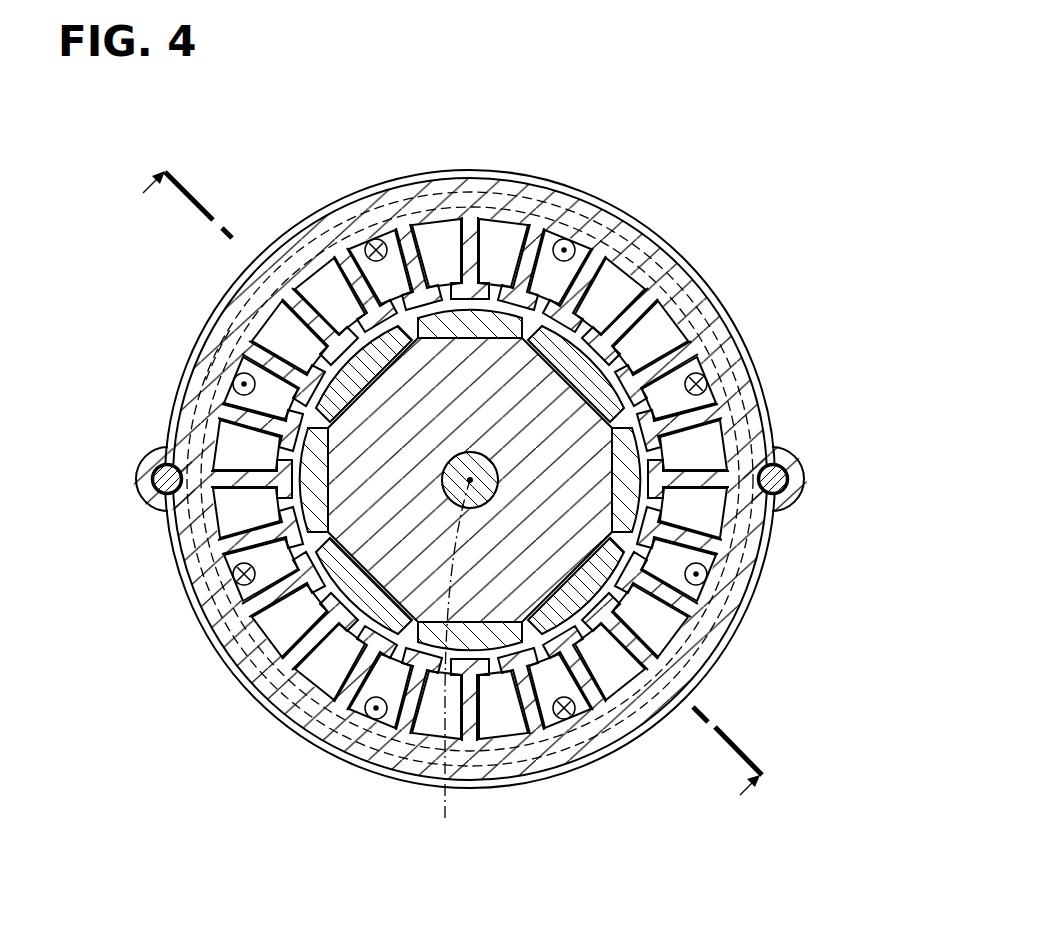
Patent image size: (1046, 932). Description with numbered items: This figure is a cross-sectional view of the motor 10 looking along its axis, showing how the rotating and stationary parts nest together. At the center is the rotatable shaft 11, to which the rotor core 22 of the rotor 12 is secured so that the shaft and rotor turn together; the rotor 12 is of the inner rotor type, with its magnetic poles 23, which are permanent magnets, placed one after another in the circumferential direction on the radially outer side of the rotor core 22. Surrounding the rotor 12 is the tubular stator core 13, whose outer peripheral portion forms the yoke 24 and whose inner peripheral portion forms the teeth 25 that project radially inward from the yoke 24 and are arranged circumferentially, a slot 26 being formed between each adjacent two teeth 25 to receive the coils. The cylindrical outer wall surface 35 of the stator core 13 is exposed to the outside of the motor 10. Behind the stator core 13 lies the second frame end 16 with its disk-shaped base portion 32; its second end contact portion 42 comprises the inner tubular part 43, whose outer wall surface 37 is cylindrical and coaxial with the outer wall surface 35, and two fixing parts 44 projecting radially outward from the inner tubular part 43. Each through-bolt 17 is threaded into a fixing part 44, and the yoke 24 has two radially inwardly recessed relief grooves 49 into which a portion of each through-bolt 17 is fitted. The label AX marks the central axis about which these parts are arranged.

The motor 10 is at (239, 218).
The rotatable shaft 11 is at (637, 382).
The rotor 12 is at (507, 128).
The stator core 13 is at (322, 150).
The second frame end 16 is at (235, 278).
The through-bolt 17 is at (150, 481).
The rotor core 22 is at (460, 370).
The magnetic pole 23 is at (492, 322).
The yoke 24 is at (289, 252).
The tooth 25 is at (336, 275).
The slot 26 is at (383, 236).
The base portion 32 is at (222, 346).
The outer wall surface 35 is at (272, 708).
The outer wall surface 37 is at (258, 668).
The second end contact portion 42 is at (100, 383).
The inner tubular part 43 is at (212, 371).
The fixing part 44 is at (155, 458).
The relief groove 49 is at (166, 494).
The central axis AX is at (451, 661).